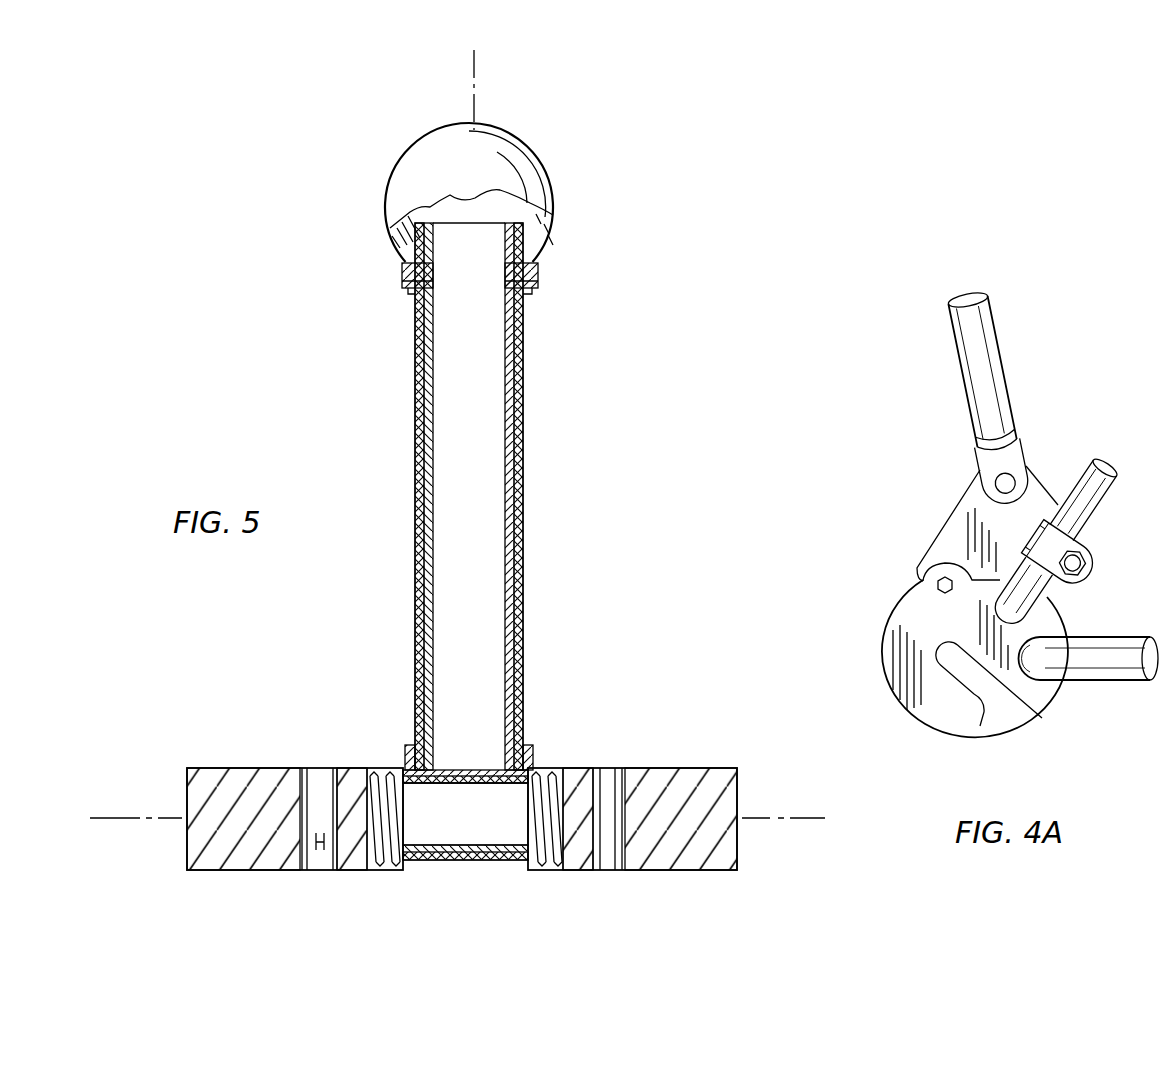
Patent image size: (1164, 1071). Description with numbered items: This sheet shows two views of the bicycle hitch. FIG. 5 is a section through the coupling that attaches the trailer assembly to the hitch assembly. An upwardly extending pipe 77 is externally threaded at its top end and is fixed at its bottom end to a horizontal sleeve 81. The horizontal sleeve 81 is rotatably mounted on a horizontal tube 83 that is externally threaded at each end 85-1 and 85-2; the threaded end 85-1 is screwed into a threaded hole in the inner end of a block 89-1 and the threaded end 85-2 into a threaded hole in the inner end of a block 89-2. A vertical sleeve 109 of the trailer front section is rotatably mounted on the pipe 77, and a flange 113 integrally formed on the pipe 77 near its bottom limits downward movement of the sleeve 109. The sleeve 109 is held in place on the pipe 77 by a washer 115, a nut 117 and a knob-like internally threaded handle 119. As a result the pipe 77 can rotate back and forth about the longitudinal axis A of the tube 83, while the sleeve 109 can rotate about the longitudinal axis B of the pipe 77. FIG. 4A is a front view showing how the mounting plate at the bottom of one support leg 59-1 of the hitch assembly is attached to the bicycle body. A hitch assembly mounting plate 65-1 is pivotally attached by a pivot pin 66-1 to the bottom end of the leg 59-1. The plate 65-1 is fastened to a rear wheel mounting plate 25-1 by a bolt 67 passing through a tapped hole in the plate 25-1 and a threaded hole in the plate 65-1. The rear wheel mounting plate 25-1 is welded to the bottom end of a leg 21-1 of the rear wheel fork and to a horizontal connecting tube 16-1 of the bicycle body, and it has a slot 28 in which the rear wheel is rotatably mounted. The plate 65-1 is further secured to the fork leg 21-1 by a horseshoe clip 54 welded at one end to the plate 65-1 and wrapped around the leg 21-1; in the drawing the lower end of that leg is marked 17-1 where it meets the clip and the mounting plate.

In FIG. 5, the longitudinal axis of pipe B is at (476, 100).
In FIG. 5, the longitudinal axis of tube A is at (753, 818).
In FIG. 5, the internally threaded handle 119 is at (548, 170).
In FIG. 5, the nut 117 is at (538, 268).
In FIG. 5, the washer 115 is at (528, 289).
In FIG. 5, the pipe 77 is at (510, 340).
In FIG. 5, the vertical sleeve 109 is at (525, 410).
In FIG. 5, the flange 113 is at (410, 748).
In FIG. 5, the horizontal sleeve 81 is at (525, 762).
In FIG. 5, the horizontal tube 83 is at (432, 845).
In FIG. 5, the block 89-1 is at (248, 768).
In FIG. 5, the block 89-2 is at (658, 772).
In FIG. 5, the externally threaded end of tube 85-1 is at (378, 850).
In FIG. 5, the externally threaded end of tube 85-2 is at (545, 850).
In FIG. 4A, the support leg 59-1 is at (988, 305).
In FIG. 4A, the pivot pin 66-1 is at (998, 478).
In FIG. 4A, the hitch assembly mounting plate 65-1 is at (950, 515).
In FIG. 4A, the leg of rear wheel fork 21-1 is at (1080, 462).
In FIG. 4A, the pin lower end 17-1 is at (1097, 505).
In FIG. 4A, the horseshoe clip 54 is at (1097, 556).
In FIG. 4A, the bolt 67 is at (936, 585).
In FIG. 4A, the rear wheel mounting plate 25-1 is at (895, 638).
In FIG. 4A, the slot 28 is at (1003, 718).
In FIG. 4A, the horizontal connecting tube 16-1 is at (1085, 680).